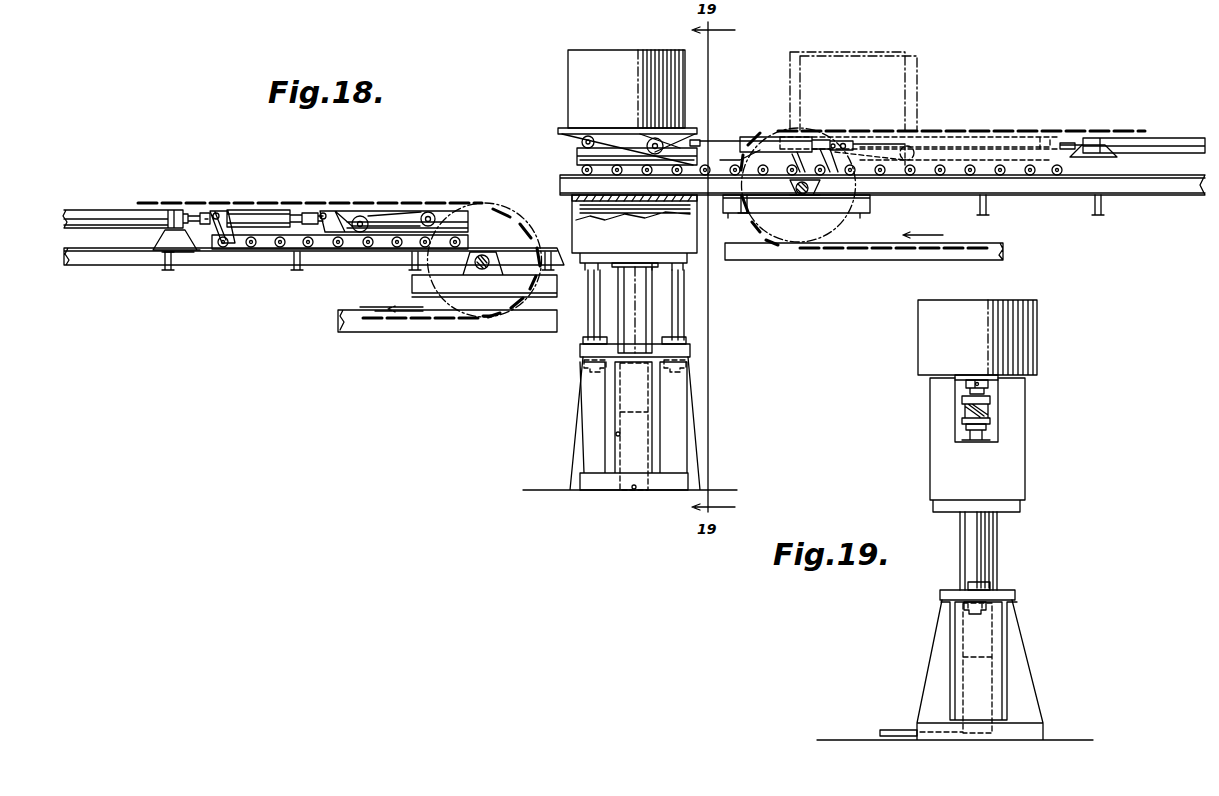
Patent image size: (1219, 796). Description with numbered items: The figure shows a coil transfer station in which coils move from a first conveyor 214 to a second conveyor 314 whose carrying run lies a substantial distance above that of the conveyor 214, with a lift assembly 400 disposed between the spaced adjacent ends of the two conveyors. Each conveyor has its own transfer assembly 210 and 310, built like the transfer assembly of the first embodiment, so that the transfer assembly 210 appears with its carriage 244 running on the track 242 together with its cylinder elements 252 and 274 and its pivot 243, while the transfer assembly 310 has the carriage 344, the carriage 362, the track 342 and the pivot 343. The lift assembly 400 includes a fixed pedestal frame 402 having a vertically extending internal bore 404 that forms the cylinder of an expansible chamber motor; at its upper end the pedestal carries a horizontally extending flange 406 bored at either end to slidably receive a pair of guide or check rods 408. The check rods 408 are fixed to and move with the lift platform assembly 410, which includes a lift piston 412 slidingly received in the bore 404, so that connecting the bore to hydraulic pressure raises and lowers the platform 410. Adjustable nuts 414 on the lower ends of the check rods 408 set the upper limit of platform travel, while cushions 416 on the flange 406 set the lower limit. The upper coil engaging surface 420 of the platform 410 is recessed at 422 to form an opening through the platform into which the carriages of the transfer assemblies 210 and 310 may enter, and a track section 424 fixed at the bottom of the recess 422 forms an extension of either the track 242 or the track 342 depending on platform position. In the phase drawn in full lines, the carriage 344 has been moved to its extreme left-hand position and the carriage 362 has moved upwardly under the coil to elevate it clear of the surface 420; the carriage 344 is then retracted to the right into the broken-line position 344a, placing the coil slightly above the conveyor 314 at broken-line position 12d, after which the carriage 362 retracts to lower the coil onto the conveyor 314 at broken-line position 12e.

In FIG. 18, the lift cylinder of transfer assembly 210 252 is at (102, 212).
In FIG. 18, the transfer cylinder of transfer assembly 210 274 is at (267, 212).
In FIG. 18, the first conveyor 214 is at (330, 198).
In FIG. 18, the transfer assembly 210 is at (390, 214).
In FIG. 18, the carriage of transfer assembly 210 244 is at (352, 247).
In FIG. 18, the track 242 is at (272, 258).
In FIG. 18, the pivot of transfer assembly 210 243 is at (484, 252).
In FIG. 18, the carriage 362 is at (632, 139).
In FIG. 19, the carriage 362 is at (960, 385).
In FIG. 18, the carriage 344 is at (578, 152).
In FIG. 18, the track section 424 is at (575, 187).
In FIG. 19, the track section 424 is at (955, 433).
In FIG. 18, the recess 422 is at (608, 196).
In FIG. 19, the recess 422 is at (1000, 433).
In FIG. 18, the lift platform assembly 410 is at (660, 232).
In FIG. 19, the lift platform assembly 410 is at (1018, 468).
In FIG. 18, the transfer assembly 310 is at (736, 137).
In FIG. 19, the transfer assembly 310 is at (998, 413).
In FIG. 18, the coil position 12d is at (889, 51).
In FIG. 18, the coil position 12e is at (917, 82).
In FIG. 18, the second conveyor 314 is at (1054, 130).
In FIG. 18, the track 342 is at (912, 195).
In FIG. 18, the pivot of transfer assembly 310 343 is at (958, 195).
In FIG. 18, the retracted carriage position 344a is at (1060, 152).
In FIG. 18, the lift piston 412 is at (617, 301).
In FIG. 19, the lift piston 412 is at (992, 540).
In FIG. 18, the guide or check rods 408 is at (680, 310).
In FIG. 19, the guide or check rods 408 is at (986, 566).
In FIG. 18, the cushions 416 is at (690, 340).
In FIG. 18, the flange 406 is at (690, 350).
In FIG. 19, the flange 406 is at (1015, 595).
In FIG. 18, the lift assembly 400 is at (700, 363).
In FIG. 19, the lift assembly 400 is at (1035, 507).
In FIG. 18, the adjustable nuts 414 is at (678, 365).
In FIG. 19, the adjustable nuts 414 is at (965, 615).
In FIG. 18, the internal bore 404 is at (617, 434).
In FIG. 19, the internal bore 404 is at (988, 683).
In FIG. 18, the pedestal frame 402 is at (685, 453).
In FIG. 19, the pedestal frame 402 is at (1028, 723).
In FIG. 19, the coil engaging surface 420 is at (1015, 380).